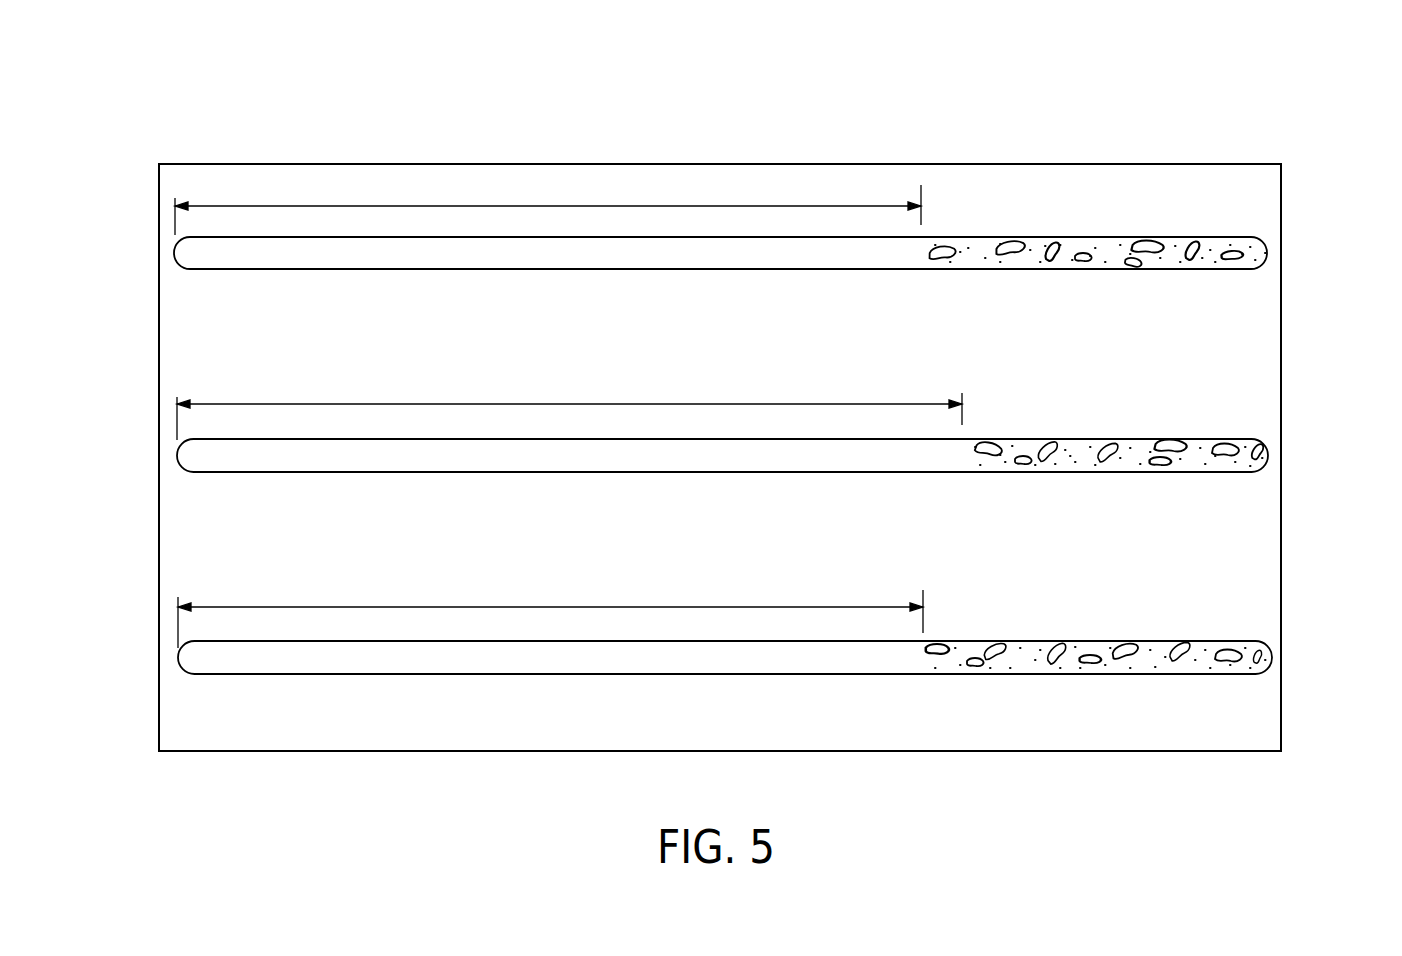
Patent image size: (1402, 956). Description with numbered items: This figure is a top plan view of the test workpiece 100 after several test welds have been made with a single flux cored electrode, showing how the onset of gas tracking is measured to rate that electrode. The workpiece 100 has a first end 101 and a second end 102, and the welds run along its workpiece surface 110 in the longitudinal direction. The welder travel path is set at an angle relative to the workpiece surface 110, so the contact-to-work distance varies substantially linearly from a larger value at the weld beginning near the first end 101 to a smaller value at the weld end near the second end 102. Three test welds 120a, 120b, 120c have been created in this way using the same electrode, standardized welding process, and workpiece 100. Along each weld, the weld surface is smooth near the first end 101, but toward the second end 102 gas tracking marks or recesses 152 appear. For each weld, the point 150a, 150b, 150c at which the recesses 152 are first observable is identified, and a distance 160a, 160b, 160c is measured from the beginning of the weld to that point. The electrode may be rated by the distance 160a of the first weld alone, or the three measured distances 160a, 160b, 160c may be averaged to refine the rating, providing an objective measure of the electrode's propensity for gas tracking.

The workpiece 100 is at (845, 118).
The first end 101 is at (150, 283).
The second end 102 is at (1295, 288).
The workpiece surface 110 is at (1155, 170).
The test weld 120a is at (327, 642).
The test weld 120b is at (352, 440).
The test weld 120c is at (375, 237).
The point 150a is at (925, 677).
The point 150b is at (963, 471).
The point 150c is at (923, 269).
The gas tracking marks or recesses 152 is at (1095, 489).
The distance 160a is at (587, 607).
The distance 160b is at (603, 404).
The distance 160c is at (547, 205).